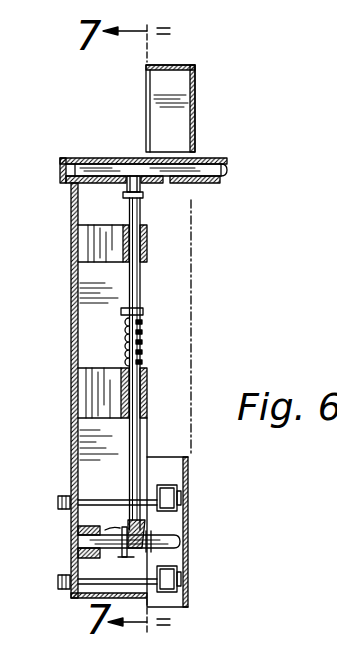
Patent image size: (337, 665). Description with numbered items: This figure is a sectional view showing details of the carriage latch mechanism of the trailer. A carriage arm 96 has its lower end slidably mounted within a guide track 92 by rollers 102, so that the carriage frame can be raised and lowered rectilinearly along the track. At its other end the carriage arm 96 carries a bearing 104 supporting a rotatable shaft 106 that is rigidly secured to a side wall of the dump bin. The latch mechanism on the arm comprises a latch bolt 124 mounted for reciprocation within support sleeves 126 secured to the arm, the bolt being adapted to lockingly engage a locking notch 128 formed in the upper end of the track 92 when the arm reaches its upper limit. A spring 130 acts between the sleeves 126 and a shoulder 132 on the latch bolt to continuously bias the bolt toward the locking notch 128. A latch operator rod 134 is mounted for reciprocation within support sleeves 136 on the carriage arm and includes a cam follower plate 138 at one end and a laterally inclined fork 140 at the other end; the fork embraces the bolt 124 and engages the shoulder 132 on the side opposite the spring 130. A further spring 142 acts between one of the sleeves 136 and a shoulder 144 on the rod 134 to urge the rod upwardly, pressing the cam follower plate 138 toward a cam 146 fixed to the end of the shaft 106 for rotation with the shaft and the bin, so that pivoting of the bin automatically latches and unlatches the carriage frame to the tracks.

The guide track 92 is at (188, 466).
The carriage arm 96 is at (71, 330).
The roller 102 is at (179, 496).
The bearing 104 is at (78, 158).
The rotatable shaft 106 is at (215, 165).
The latch bolt 124 is at (179, 543).
The support sleeve 126 is at (76, 549).
The locking notch 128 is at (195, 130).
The spring 130 is at (106, 530).
The shoulder 132 is at (132, 559).
The latch operator rod 134 is at (140, 268).
The support sleeve 136 is at (147, 240).
The cam follower plate 138 is at (143, 196).
The laterally inclined fork 140 is at (136, 529).
The spring 142 is at (143, 348).
The shoulder 144 is at (143, 312).
The cam 146 is at (127, 158).